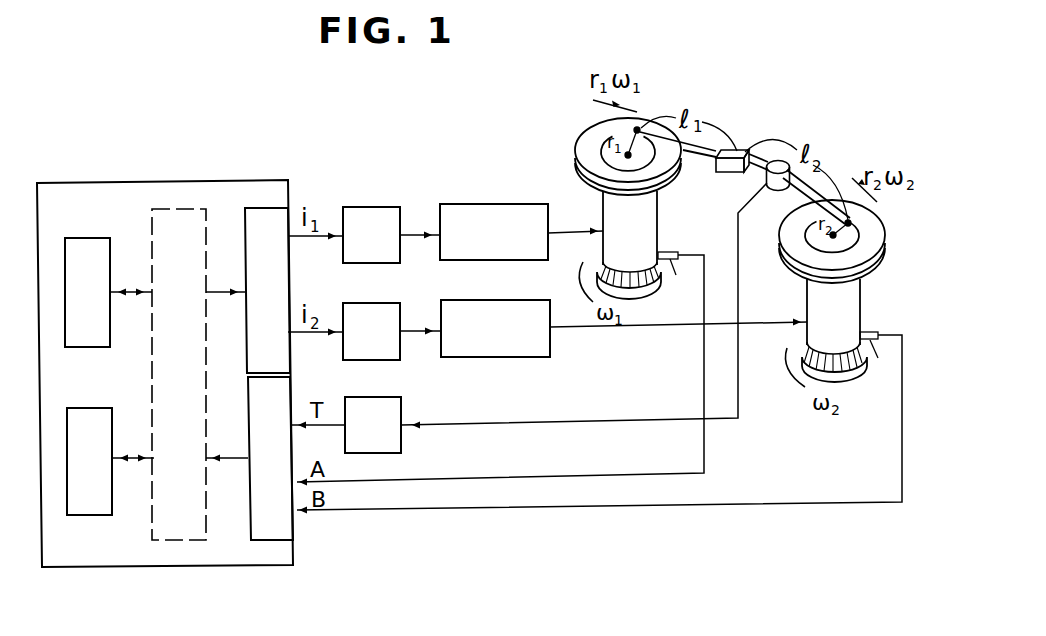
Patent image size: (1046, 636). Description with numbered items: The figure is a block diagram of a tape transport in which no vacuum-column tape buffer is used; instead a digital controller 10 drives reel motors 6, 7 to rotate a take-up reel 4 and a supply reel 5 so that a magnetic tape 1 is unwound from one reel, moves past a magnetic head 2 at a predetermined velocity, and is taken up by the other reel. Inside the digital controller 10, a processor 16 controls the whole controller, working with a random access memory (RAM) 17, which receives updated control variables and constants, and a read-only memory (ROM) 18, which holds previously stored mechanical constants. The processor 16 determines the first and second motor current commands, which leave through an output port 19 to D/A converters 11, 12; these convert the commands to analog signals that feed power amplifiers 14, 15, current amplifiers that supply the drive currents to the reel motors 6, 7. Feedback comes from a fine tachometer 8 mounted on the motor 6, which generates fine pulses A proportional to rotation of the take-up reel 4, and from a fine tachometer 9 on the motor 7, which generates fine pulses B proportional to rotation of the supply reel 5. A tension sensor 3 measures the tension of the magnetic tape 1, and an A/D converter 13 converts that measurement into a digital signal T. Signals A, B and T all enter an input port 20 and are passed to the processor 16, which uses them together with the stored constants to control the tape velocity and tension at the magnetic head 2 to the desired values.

The magnetic tape 1 is at (702, 157).
The magnetic head 2 is at (734, 150).
The tension sensor 3 is at (778, 161).
The take-up reel 4 is at (577, 157).
The supply reel 5 is at (885, 234).
The reel motor 6 is at (603, 213).
The reel motor 7 is at (860, 303).
The fine tachometer 8 is at (675, 279).
The fine tachometer 9 is at (875, 360).
The digital controller 10 is at (104, 183).
The D/A converter 11 is at (368, 207).
The D/A converter 12 is at (383, 361).
The A/D converter 13 is at (385, 454).
The power amplifier 14 is at (489, 204).
The power amplifier 15 is at (499, 358).
The processor 16 is at (152, 368).
The random access memory (RAM) 17 is at (80, 238).
The read-only memory (ROM) 18 is at (89, 516).
The output port 19 is at (265, 208).
The input port 20 is at (272, 541).